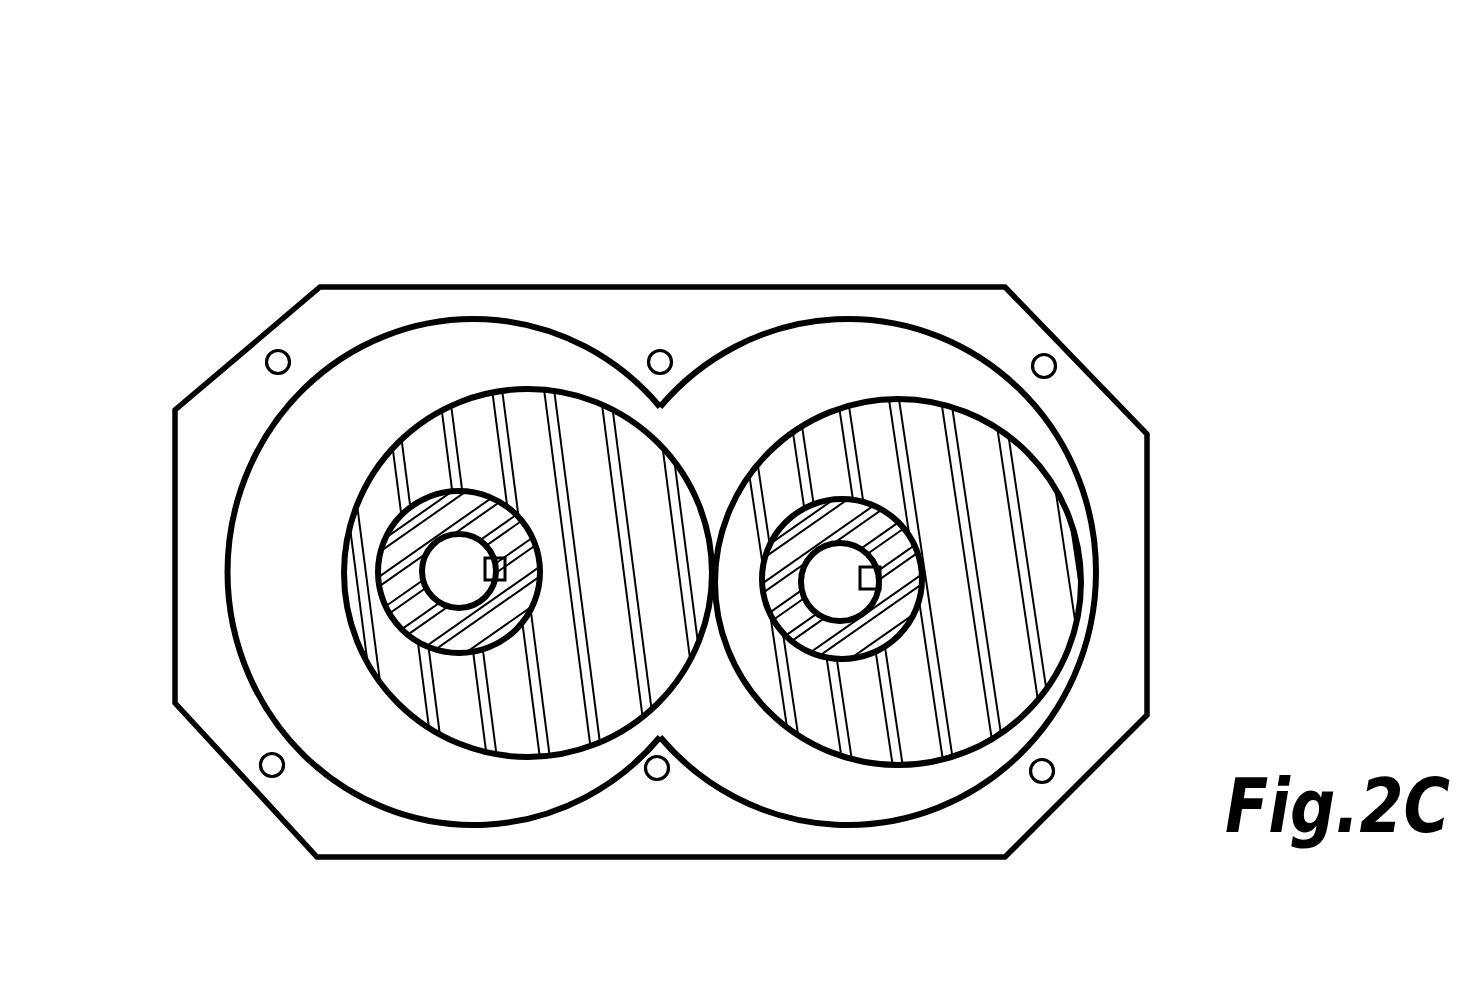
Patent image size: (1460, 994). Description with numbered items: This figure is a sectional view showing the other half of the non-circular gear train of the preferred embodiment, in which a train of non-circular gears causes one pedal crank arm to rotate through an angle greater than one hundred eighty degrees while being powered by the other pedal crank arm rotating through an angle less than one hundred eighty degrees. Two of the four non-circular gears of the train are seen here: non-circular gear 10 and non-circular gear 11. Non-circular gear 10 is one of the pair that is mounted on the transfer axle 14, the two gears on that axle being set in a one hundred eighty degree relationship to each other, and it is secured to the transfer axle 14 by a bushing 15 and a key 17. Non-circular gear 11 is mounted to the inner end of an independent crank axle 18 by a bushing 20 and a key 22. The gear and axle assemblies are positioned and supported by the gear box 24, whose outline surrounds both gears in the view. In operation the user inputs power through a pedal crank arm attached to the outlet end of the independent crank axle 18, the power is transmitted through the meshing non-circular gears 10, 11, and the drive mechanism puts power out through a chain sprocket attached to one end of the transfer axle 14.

The non-circular gear 10 is at (467, 453).
The non-circular gear 11 is at (870, 470).
The transfer axle 14 is at (457, 572).
The bushing 15 is at (448, 513).
The key 17 is at (495, 565).
The independent crank axle 18 is at (843, 573).
The bushing 20 is at (820, 527).
The key 22 is at (878, 568).
The gear box 24 is at (258, 385).